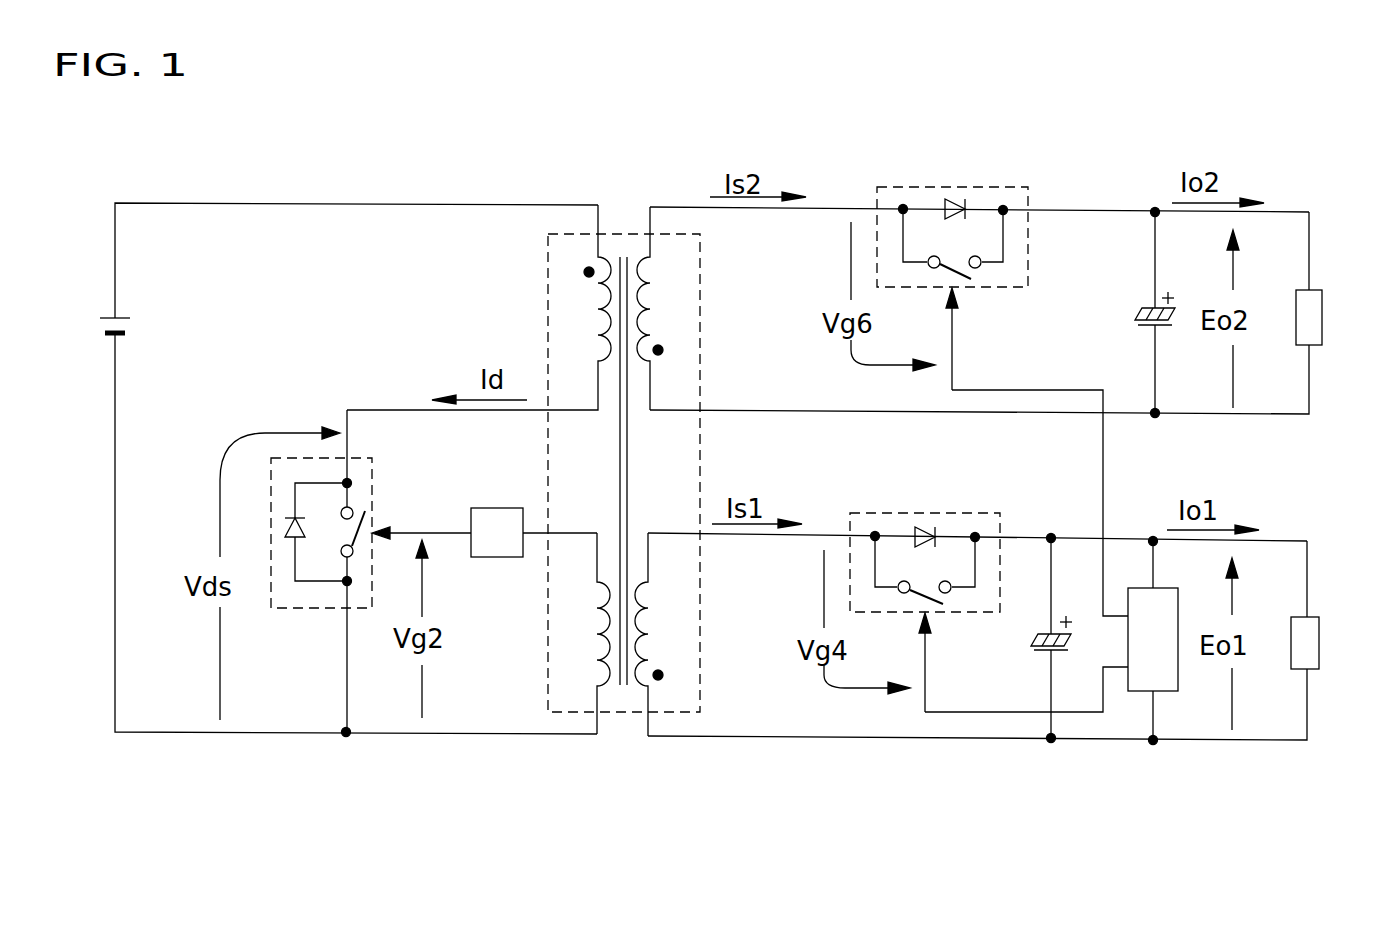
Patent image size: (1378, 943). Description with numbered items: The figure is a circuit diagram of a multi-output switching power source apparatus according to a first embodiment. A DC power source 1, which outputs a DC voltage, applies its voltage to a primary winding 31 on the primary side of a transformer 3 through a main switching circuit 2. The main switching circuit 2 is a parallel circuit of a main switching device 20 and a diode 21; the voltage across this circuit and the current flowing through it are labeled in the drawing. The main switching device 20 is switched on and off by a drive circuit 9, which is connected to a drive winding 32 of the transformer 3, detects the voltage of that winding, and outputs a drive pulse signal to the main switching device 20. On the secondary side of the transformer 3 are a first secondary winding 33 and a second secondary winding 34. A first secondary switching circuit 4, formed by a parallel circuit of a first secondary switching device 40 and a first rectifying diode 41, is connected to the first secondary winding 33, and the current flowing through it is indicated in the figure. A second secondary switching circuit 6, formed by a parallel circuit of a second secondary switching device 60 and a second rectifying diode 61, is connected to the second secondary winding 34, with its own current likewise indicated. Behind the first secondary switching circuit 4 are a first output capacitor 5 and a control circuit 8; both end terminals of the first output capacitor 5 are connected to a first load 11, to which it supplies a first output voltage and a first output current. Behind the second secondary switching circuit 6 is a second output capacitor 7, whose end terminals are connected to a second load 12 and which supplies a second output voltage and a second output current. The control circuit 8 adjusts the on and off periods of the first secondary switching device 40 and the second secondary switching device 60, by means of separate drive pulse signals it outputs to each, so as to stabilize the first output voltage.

The DC power source 1 is at (101, 316).
The main switching circuit 2 is at (319, 571).
The main switching device 20 is at (339, 533).
The diode 21 is at (290, 515).
The transformer 3 is at (559, 448).
The primary winding 31 is at (596, 308).
The drive winding 32 is at (592, 635).
The first secondary winding 33 is at (655, 635).
The second secondary winding 34 is at (655, 308).
The first secondary switching circuit 4 is at (925, 563).
The first secondary switching device 40 is at (925, 570).
The first rectifying diode 41 is at (915, 530).
The first output capacitor 5 is at (1042, 646).
The second secondary switching circuit 6 is at (978, 209).
The second secondary switching device 60 is at (955, 257).
The second rectifying diode 61 is at (940, 203).
The second output capacitor 7 is at (1142, 308).
The control circuit 8 is at (1165, 588).
The drive circuit 9 is at (495, 508).
The first load 11 is at (1322, 638).
The second load 12 is at (1325, 310).